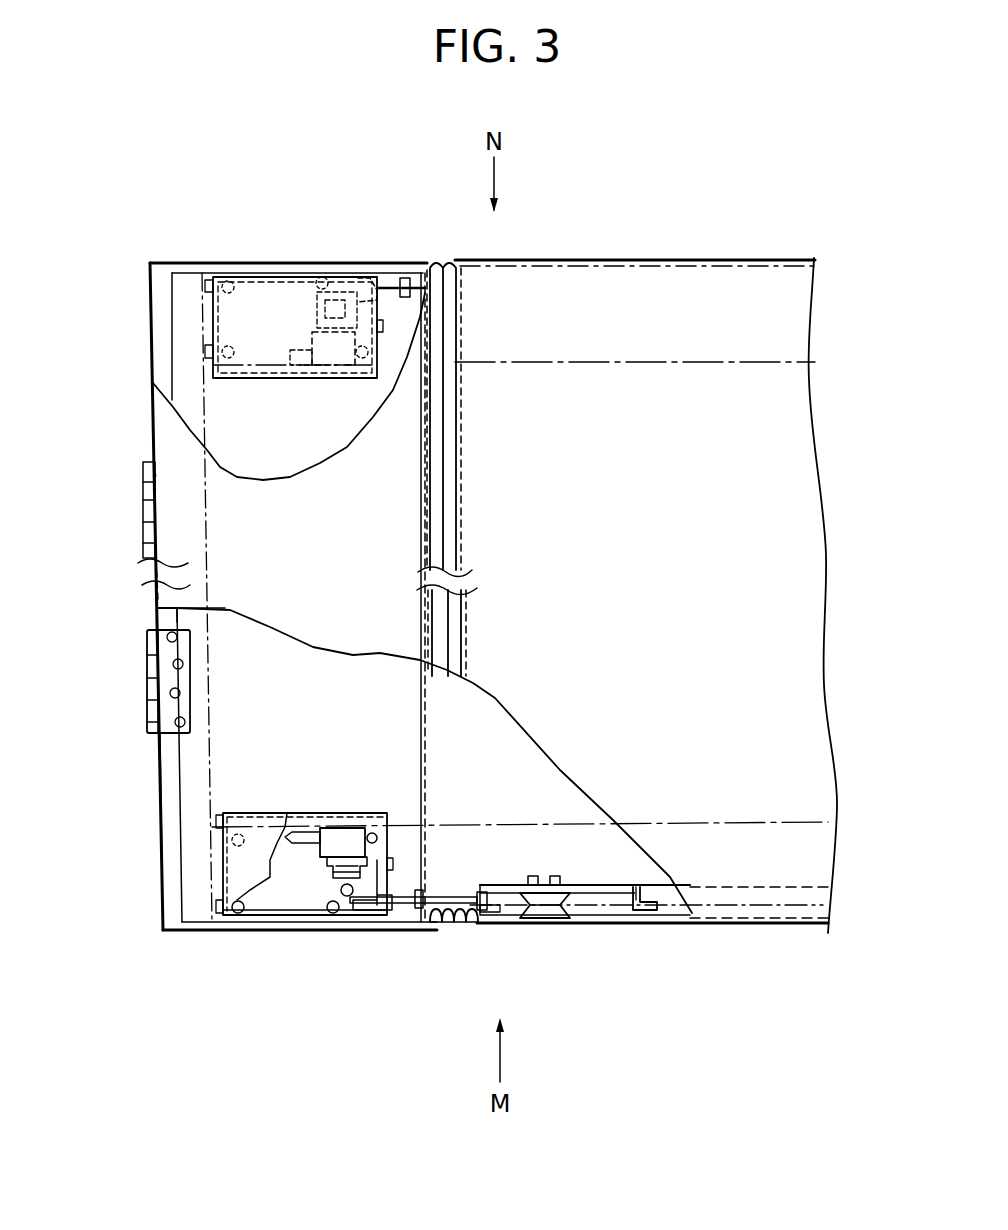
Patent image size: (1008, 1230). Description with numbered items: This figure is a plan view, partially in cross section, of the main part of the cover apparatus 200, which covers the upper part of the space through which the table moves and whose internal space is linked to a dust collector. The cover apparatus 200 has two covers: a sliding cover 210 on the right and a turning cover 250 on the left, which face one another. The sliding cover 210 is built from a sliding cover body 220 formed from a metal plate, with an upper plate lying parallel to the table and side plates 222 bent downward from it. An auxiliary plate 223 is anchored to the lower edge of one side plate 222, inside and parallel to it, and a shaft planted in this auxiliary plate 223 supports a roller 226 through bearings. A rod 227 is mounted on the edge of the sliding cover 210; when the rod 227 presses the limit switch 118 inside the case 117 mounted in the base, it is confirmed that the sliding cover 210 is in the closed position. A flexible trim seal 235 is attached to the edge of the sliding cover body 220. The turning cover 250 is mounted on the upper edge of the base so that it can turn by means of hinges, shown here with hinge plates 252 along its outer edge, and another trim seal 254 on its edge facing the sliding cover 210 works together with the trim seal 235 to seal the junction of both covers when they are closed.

The case 117 is at (272, 378).
The limit switch 118 is at (337, 338).
The cover apparatus 200 is at (848, 500).
The sliding cover 210 is at (643, 241).
The sliding cover body 220 is at (724, 383).
The side plates 222 is at (641, 915).
The auxiliary plate 223 is at (618, 885).
The roller 226 is at (540, 922).
The rod 227 is at (460, 893).
The trim seal 235 is at (458, 450).
The turning cover 250 is at (227, 487).
The hinge 252 is at (167, 713).
The trim seal 254 is at (437, 258).